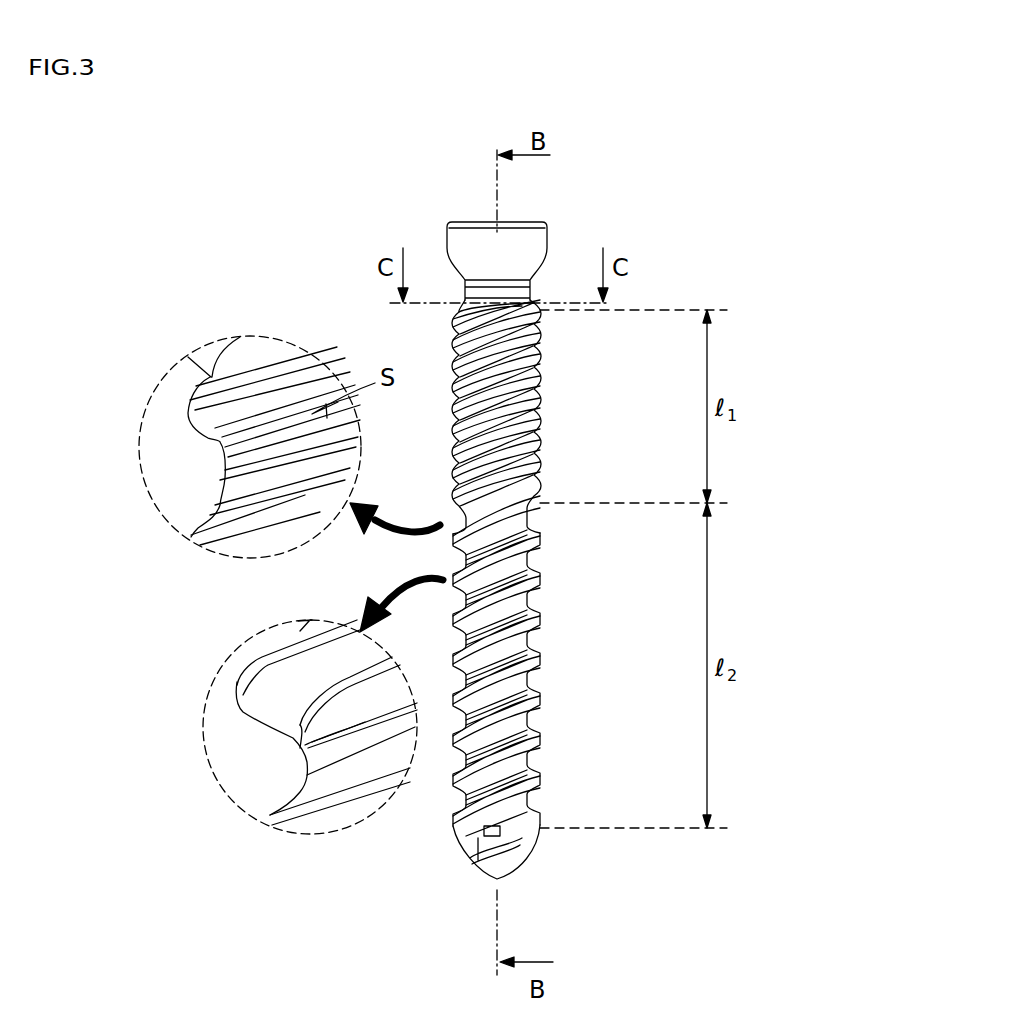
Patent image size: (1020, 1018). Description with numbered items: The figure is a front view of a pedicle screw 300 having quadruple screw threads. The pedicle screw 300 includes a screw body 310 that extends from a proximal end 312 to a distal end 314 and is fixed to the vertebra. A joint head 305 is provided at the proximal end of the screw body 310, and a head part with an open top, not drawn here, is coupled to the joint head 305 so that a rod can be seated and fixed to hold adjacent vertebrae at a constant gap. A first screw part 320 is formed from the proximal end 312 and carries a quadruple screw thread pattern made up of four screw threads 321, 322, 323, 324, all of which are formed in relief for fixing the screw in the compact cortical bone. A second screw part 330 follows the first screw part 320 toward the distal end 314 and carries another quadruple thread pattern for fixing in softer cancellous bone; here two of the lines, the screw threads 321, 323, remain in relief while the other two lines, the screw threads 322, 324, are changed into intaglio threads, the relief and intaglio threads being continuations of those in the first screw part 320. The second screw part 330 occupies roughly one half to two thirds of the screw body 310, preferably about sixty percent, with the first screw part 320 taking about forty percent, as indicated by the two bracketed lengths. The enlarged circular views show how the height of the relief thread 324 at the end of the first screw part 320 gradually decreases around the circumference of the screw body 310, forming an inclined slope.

The pedicle screw 300 is at (775, 444).
The joint head 305 is at (566, 232).
The screw body 310 is at (345, 580).
The proximal end 312 is at (422, 319).
The distal end 314 is at (462, 879).
The first screw part 320 is at (640, 310).
The screw thread 321 is at (205, 515).
The screw thread 322 is at (470, 548).
The screw thread 323 is at (188, 357).
The screw thread 324 is at (462, 598).
The second screw part 330 is at (640, 503).